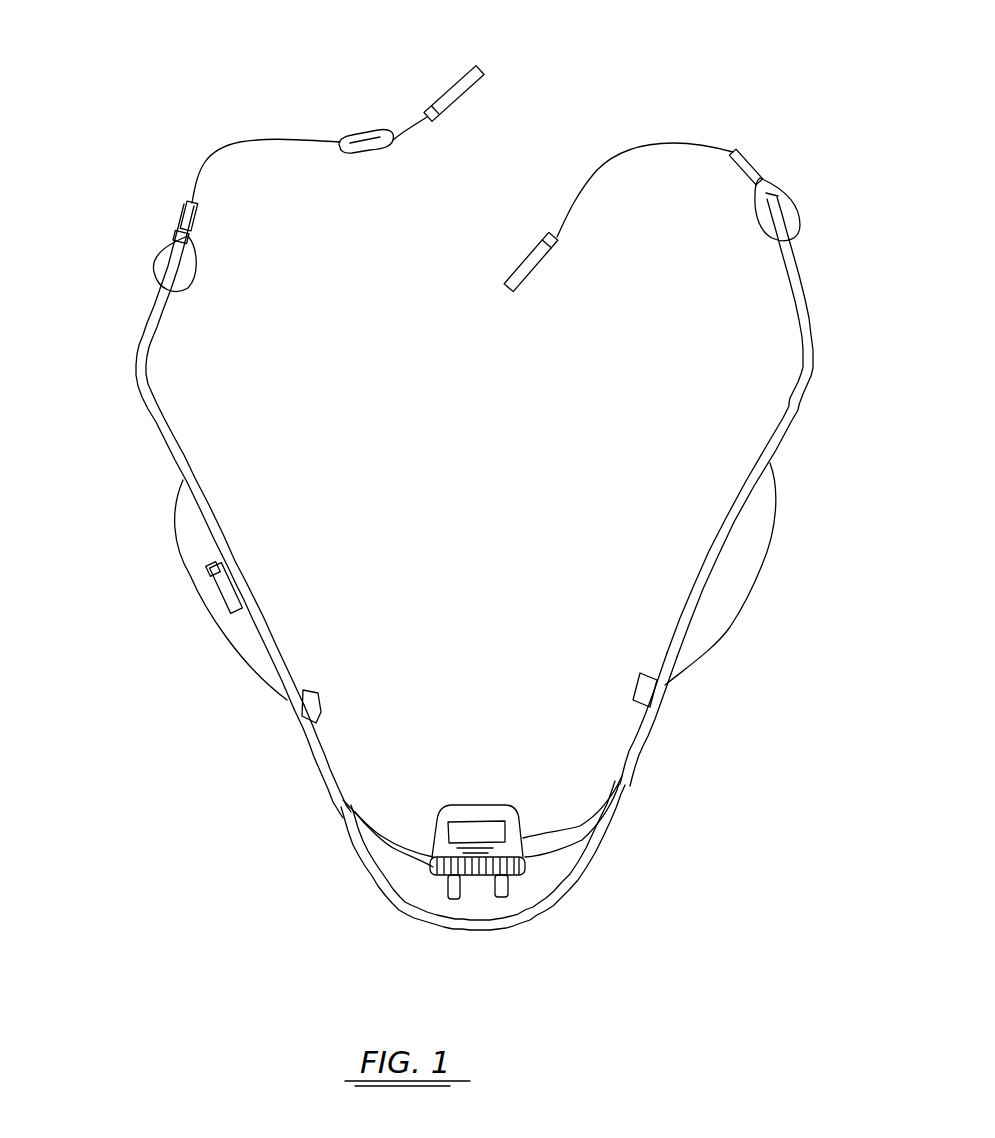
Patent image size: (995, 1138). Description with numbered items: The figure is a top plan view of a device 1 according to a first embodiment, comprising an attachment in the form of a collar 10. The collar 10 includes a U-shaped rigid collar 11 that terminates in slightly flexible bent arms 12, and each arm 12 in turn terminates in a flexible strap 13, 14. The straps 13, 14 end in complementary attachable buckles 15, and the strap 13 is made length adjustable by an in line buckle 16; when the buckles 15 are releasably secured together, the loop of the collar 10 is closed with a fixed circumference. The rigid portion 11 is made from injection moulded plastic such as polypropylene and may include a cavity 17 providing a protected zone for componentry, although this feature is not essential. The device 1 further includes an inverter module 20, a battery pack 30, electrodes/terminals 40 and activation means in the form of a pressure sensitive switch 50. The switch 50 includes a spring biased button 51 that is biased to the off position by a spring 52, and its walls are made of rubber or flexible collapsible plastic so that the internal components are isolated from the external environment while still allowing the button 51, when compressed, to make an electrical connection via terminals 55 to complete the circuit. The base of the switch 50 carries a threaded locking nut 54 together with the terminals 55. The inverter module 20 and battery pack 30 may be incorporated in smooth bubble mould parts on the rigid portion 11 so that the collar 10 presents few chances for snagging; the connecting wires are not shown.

The device 1 is at (193, 732).
The collar 10 is at (641, 753).
The U-shaped rigid collar 11 is at (330, 785).
The bent arms 12 is at (162, 405).
The flexible strap 13 is at (240, 142).
The flexible strap 14 is at (677, 140).
The attachable buckles 15 is at (480, 102).
The in line buckle 16 is at (367, 133).
The cavity 17 is at (393, 864).
The inverter module 20 is at (195, 533).
The battery pack 30 is at (760, 523).
The electrodes/terminals 40 is at (321, 714).
The pressure sensitive switch 50 is at (493, 803).
The spring biased button 51 is at (512, 838).
The spring 52 is at (563, 832).
The threaded locking nut 54 is at (437, 872).
The terminals 55 is at (497, 876).